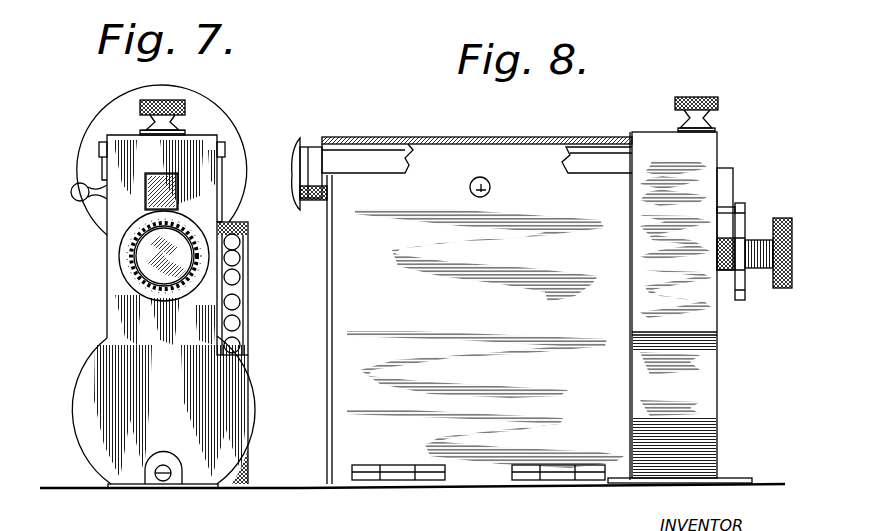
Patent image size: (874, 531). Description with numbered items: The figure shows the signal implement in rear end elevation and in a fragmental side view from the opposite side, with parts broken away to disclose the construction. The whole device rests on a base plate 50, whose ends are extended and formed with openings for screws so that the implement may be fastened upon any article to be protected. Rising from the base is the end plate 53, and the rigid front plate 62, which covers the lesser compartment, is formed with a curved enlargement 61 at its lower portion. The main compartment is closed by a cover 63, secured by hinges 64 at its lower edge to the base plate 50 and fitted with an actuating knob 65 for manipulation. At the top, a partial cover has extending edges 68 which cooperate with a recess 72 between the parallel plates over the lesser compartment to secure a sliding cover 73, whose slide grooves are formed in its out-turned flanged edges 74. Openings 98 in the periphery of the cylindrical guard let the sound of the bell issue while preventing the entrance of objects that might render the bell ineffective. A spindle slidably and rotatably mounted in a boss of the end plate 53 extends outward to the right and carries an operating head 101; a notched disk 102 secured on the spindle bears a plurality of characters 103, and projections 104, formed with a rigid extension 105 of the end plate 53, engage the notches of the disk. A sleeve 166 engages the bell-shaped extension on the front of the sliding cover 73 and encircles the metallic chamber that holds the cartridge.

In FIG. 7, the base plate 50 is at (215, 490).
In FIG. 8, the base plate 50 is at (470, 487).
In FIG. 7, the end plate 53 is at (130, 328).
In FIG. 7, the curved enlargement 61 is at (83, 433).
In FIG. 8, the curved enlargement 61 is at (680, 398).
In FIG. 8, the front plate 62 is at (683, 160).
In FIG. 8, the cover 63 is at (357, 294).
In FIG. 8, the hinges 64 is at (545, 465).
In FIG. 7, the actuating knob 65 is at (71, 190).
In FIG. 8, the actuating knob 65 is at (492, 188).
In FIG. 7, the extending edges 68 is at (105, 145).
In FIG. 8, the recess 72 is at (412, 160).
In FIG. 8, the sliding cover 73 is at (487, 140).
In FIG. 7, the out-turned flanged edges 74 is at (103, 152).
In FIG. 7, the openings 98 is at (237, 325).
In FIG. 7, the operating head 101 is at (158, 268).
In FIG. 8, the operating head 101 is at (778, 290).
In FIG. 7, the notched disk 102 is at (134, 253).
In FIG. 8, the notched disk 102 is at (741, 208).
In FIG. 7, the characters 103 is at (140, 237).
In FIG. 7, the projections 104 is at (148, 218).
In FIG. 8, the projections 104 is at (735, 209).
In FIG. 7, the rigid extension 105 is at (160, 195).
In FIG. 8, the rigid extension 105 is at (722, 182).
In FIG. 8, the sleeve 166 is at (305, 148).